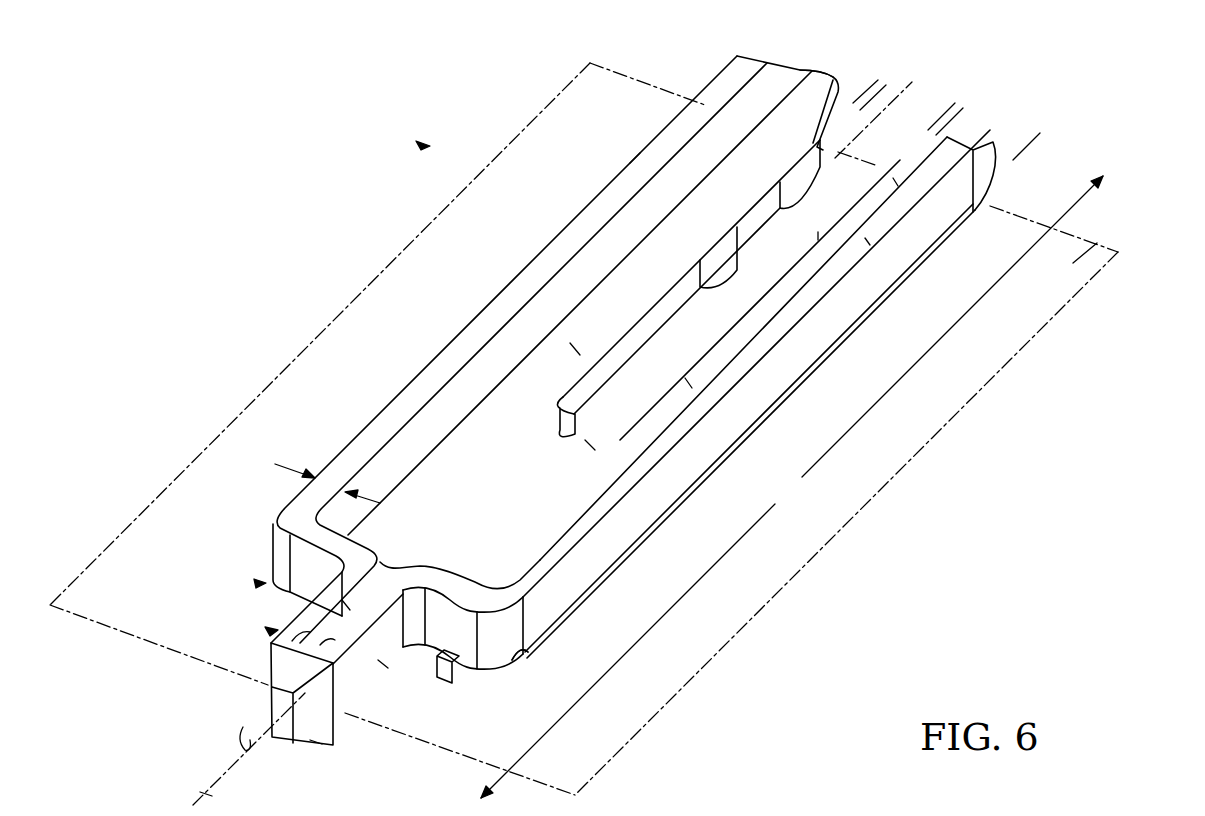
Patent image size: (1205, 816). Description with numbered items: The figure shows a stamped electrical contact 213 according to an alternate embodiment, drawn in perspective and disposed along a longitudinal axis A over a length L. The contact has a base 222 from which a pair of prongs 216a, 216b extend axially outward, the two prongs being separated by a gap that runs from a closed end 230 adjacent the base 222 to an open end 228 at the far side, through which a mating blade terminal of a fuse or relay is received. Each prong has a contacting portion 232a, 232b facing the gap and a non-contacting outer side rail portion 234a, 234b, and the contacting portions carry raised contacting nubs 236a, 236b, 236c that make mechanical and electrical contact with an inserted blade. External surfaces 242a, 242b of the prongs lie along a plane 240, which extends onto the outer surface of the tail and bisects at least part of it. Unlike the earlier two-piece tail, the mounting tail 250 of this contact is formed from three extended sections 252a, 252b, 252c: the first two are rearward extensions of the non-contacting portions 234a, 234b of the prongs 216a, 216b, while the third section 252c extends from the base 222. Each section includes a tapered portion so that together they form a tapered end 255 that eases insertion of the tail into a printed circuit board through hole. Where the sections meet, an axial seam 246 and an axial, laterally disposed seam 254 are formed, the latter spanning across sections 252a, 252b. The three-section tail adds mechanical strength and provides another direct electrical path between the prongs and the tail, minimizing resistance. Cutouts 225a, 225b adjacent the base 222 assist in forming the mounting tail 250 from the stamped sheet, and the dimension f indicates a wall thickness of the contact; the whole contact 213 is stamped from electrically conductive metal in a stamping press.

The electrical contact 213 is at (428, 145).
The prong 216a is at (783, 63).
The prong 216b is at (1082, 135).
The open end 228 is at (990, 110).
The base 222 is at (477, 473).
The contacting portion 232a is at (800, 115).
The contacting portion 232b is at (895, 180).
The non-contacting outer side rail portion 234a is at (640, 165).
The non-contacting outer side rail portion 234b is at (867, 240).
The raised contacting nub 236a is at (790, 167).
The raised contacting nub 236b is at (713, 245).
The raised contacting nub 236c is at (818, 240).
The plane 240 is at (1090, 240).
The external surface 242a is at (577, 350).
The external surface 242b is at (688, 383).
The axial seam 246 is at (347, 607).
The mounting tail 250 is at (277, 629).
The extended section 252a is at (300, 637).
The extended section 252b is at (325, 643).
The extended section 252c is at (316, 745).
The laterally disposed seam 254 is at (383, 663).
The tapered end 255 is at (243, 740).
The cutout 225a is at (262, 584).
The cutout 225b is at (518, 655).
The closed end 230 is at (590, 445).
The length L is at (792, 487).
The wall thickness f is at (328, 487).
The longitudinal axis A is at (207, 792).